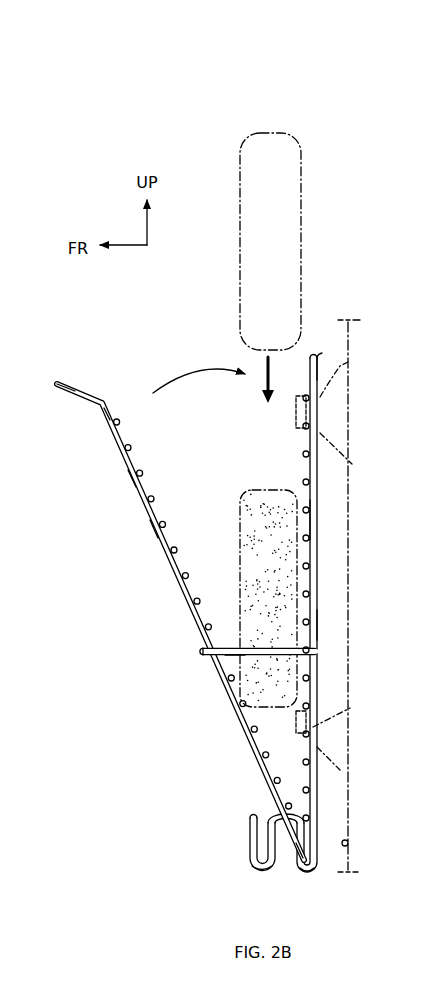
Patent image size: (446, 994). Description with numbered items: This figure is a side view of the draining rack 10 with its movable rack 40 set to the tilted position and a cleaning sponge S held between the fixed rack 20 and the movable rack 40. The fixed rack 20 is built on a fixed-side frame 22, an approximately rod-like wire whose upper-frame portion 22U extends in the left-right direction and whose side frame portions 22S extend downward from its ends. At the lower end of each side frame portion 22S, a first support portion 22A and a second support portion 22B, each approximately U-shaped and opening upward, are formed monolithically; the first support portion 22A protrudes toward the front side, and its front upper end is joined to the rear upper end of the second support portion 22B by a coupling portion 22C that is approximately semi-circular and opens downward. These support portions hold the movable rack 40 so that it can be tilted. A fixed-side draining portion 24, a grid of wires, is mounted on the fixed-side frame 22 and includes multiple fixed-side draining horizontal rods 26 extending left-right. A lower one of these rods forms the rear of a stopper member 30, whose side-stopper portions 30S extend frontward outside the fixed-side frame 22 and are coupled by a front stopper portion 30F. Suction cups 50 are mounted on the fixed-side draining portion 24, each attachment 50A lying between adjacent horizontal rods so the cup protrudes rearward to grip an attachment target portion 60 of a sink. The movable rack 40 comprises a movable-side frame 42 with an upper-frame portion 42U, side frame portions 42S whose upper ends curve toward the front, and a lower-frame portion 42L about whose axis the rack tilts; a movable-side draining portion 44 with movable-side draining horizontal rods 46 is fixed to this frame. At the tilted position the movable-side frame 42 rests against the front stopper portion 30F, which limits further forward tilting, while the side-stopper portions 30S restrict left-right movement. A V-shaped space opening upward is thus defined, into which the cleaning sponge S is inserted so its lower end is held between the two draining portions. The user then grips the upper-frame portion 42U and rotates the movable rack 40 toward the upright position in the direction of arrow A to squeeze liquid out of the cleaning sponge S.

The draining rack 10 is at (201, 280).
The fixed rack 20 is at (320, 334).
The fixed-side frame 22 is at (324, 530).
The upper-frame portion 22U is at (322, 353).
The side frame portion 22S is at (320, 516).
The first support portion 22A is at (318, 872).
The second support portion 22B is at (256, 870).
The coupling portion 22C is at (272, 817).
The fixed-side draining portion 24 is at (324, 624).
The fixed-side draining horizontal rods 26 is at (310, 483).
The stopper member 30 is at (195, 645).
The front stopper portion 30F is at (206, 652).
The side-stopper portion 30S is at (232, 659).
The movable rack 40 is at (125, 384).
The movable-side frame 42 is at (143, 518).
The upper-frame portion 42U is at (56, 379).
The side frame portion 42S is at (136, 496).
The lower-frame portion 42L is at (302, 872).
The movable-side draining portion 44 is at (150, 546).
The movable-side draining horizontal rods 46 is at (154, 499).
The suction cup 50 is at (343, 393).
The attachment 50A is at (296, 414).
The attachment target portion 60 is at (349, 843).
The cleaning sponge S is at (302, 198).
The arrow A is at (200, 371).